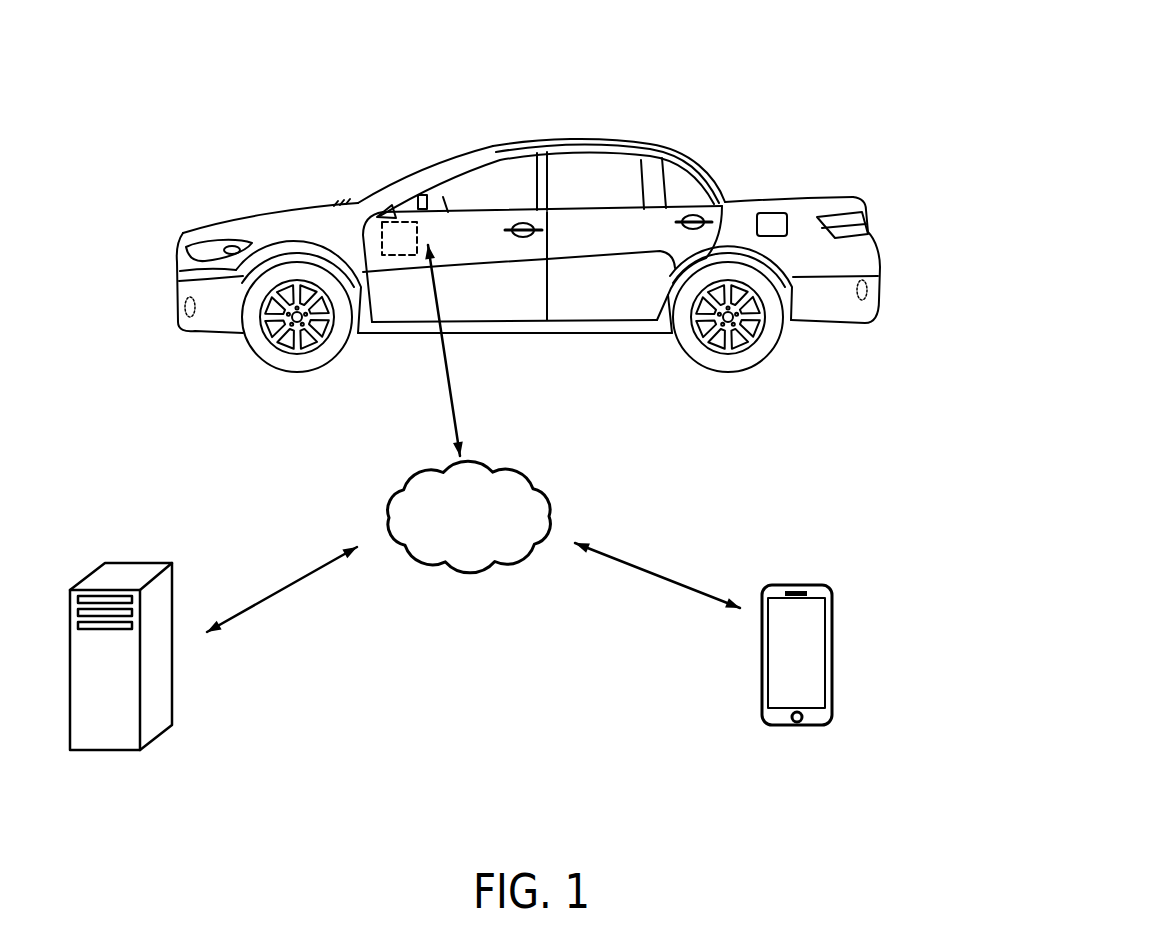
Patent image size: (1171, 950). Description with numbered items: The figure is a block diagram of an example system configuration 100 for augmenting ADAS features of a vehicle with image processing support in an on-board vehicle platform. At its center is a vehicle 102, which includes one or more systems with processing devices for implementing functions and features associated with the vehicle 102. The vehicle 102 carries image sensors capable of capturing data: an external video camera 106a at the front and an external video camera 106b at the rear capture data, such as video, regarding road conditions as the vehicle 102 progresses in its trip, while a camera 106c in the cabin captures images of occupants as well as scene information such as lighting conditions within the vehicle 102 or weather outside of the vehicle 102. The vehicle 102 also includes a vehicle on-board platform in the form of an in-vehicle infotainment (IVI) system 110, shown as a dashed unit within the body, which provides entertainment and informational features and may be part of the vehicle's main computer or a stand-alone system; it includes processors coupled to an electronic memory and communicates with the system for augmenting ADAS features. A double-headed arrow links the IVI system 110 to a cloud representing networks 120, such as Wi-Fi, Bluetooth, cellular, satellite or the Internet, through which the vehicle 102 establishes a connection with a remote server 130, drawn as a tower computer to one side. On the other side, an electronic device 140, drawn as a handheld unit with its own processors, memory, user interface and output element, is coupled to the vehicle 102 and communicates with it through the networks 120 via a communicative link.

The system configuration 100 is at (1063, 45).
The vehicle 102 is at (793, 180).
The external video camera 106a is at (170, 303).
The external video camera 106b is at (880, 297).
The camera 106c is at (427, 207).
The in-vehicle infotainment (IVI) system 110 is at (387, 218).
The networks 120 is at (469, 517).
The remote server 130 is at (121, 675).
The electronic device 140 is at (797, 672).